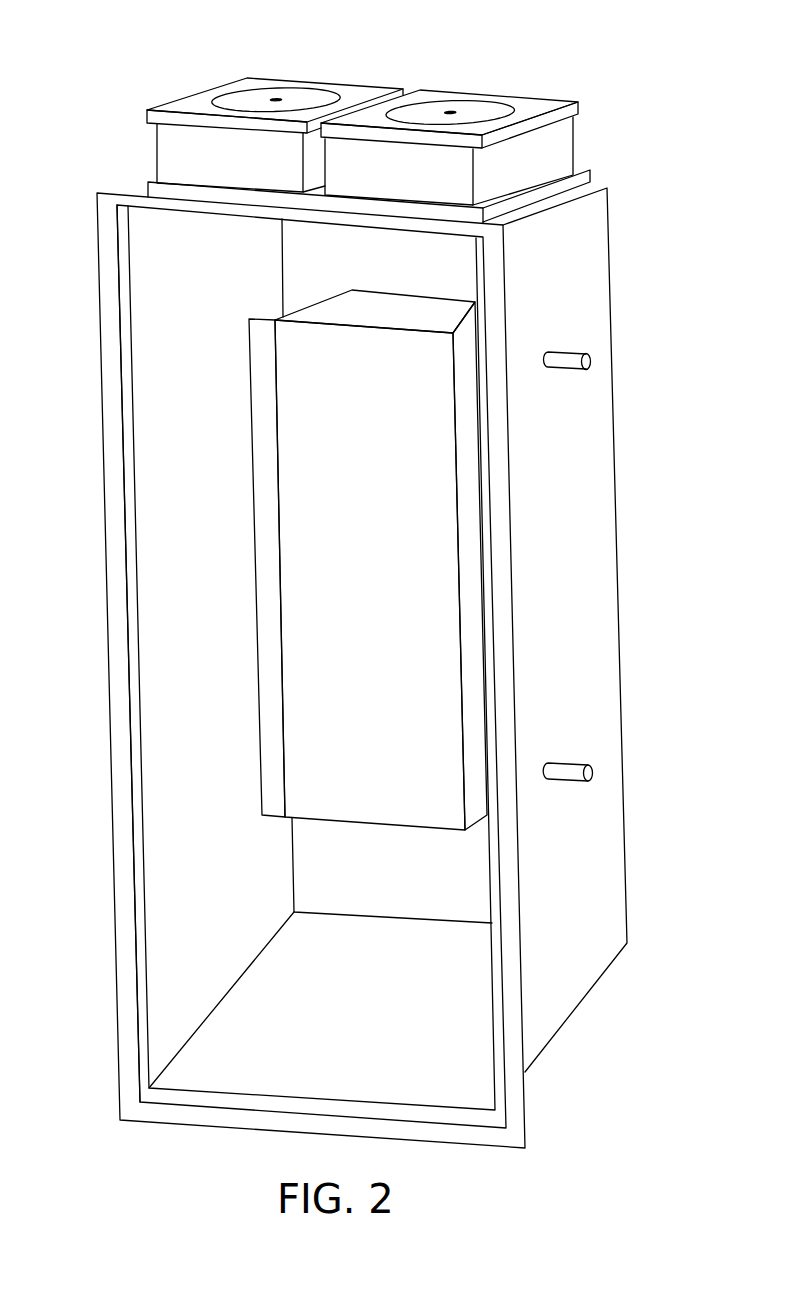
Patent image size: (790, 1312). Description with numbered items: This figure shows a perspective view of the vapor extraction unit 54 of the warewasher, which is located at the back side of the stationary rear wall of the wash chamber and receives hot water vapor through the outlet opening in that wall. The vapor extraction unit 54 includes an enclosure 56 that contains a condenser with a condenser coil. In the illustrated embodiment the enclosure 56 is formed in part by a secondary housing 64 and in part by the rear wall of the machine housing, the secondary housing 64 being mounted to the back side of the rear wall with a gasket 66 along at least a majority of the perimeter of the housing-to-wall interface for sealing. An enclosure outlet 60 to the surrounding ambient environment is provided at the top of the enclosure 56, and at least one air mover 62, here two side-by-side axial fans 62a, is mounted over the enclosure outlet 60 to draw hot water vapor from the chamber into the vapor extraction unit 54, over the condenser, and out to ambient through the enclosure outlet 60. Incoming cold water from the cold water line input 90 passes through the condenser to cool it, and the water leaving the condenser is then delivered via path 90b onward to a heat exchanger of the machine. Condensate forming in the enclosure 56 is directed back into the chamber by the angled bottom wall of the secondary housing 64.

The vapor extraction unit 54 is at (373, 576).
The enclosure 56 is at (605, 447).
The enclosure outlet 60 is at (328, 226).
The air mover 62 is at (335, 105).
The axial fan 62a is at (310, 82).
The secondary housing 64 is at (389, 651).
The gasket 66 is at (117, 603).
The cold water line input 90 is at (570, 764).
The water path 90b is at (570, 353).